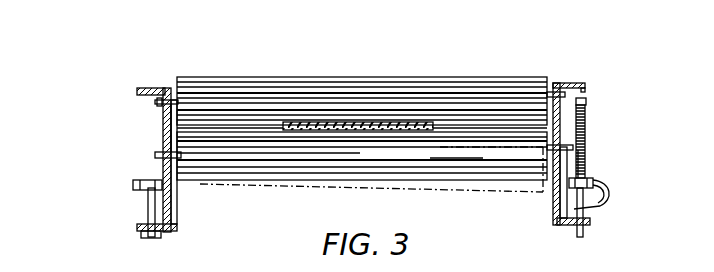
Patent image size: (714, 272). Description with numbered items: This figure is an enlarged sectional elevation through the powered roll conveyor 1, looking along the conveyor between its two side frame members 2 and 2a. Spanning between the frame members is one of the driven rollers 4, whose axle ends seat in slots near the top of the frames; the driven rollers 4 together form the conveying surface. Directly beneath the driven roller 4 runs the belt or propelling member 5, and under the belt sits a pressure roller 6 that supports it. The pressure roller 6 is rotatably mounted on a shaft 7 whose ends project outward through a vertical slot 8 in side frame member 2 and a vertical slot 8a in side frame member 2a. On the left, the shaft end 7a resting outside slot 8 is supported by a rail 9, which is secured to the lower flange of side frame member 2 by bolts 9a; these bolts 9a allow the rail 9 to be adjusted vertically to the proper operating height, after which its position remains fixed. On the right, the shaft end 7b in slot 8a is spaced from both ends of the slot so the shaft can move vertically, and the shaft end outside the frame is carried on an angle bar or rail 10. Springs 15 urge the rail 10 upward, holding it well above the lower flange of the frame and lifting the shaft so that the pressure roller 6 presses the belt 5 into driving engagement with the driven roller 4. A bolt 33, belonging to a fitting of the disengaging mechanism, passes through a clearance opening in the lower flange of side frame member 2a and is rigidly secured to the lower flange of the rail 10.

The powered roll conveyor 1 is at (553, 64).
The side frame member 2 is at (150, 88).
The side frame member 2a is at (586, 102).
The driven rollers 4 is at (496, 76).
The belt or propelling member 5 is at (313, 123).
The pressure rollers 6 is at (504, 137).
The shaft 7 is at (176, 160).
The shaft end 7a is at (152, 155).
The shaft end 7b is at (575, 148).
The vertical slot 8 is at (166, 148).
The vertical slot 8a is at (586, 121).
The rail 9 is at (133, 184).
The bolts 9a is at (147, 203).
The angle bar or rail 10 is at (600, 185).
The springs 15 is at (587, 163).
The bolt 33 is at (610, 198).